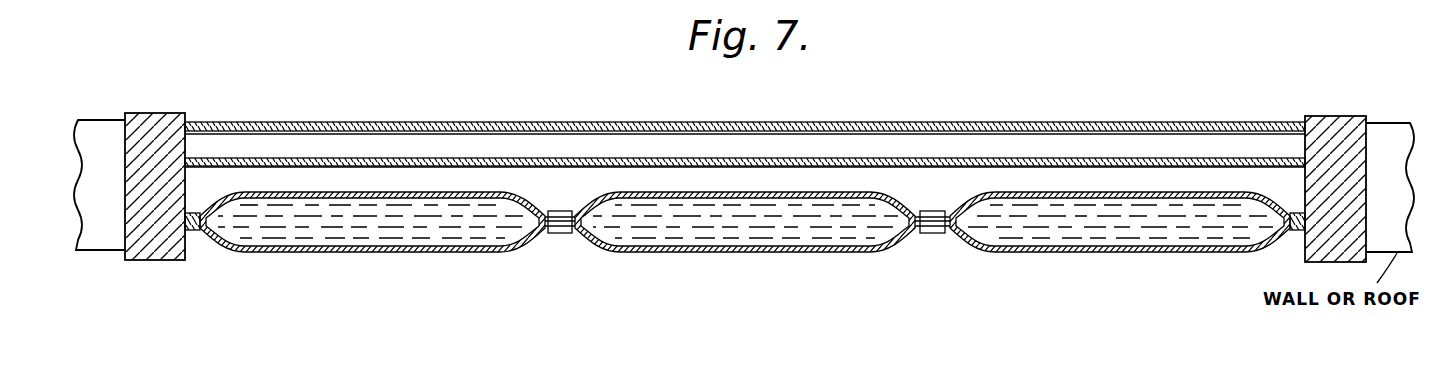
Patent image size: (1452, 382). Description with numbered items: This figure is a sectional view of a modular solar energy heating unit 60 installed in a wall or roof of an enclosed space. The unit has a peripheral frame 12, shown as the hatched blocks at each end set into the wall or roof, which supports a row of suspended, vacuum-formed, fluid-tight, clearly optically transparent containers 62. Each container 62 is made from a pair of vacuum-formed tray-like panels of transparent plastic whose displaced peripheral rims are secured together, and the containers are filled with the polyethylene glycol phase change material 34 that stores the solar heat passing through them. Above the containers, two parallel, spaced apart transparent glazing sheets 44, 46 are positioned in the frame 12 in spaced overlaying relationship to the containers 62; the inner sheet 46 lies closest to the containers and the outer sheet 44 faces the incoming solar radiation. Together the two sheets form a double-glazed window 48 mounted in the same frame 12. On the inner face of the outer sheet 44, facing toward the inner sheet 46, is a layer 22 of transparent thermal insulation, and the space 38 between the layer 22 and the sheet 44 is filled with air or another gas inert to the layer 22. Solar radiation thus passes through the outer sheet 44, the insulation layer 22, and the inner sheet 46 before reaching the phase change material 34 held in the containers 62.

The peripheral frame 12 is at (158, 113).
The layer of transparent thermal insulation 22 is at (764, 138).
The polyethylene glycol phase change material 34 is at (428, 222).
The space 38 is at (500, 143).
The outer glazing sheet 44 is at (620, 126).
The inner glazing sheet 46 is at (858, 159).
The double-glazed window 48 is at (1088, 121).
The modular solar energy heating unit 60 is at (1203, 107).
The vacuum-formed transparent container 62 is at (340, 255).